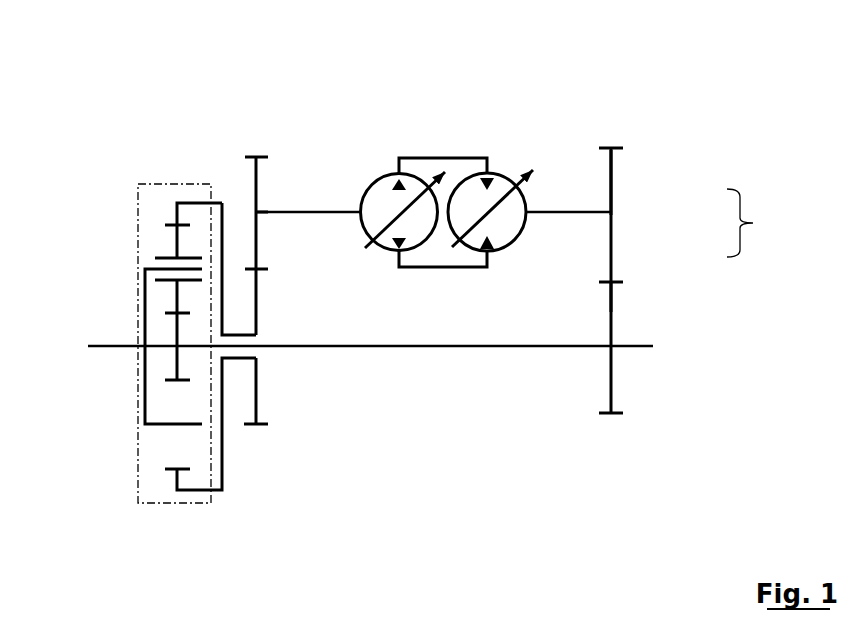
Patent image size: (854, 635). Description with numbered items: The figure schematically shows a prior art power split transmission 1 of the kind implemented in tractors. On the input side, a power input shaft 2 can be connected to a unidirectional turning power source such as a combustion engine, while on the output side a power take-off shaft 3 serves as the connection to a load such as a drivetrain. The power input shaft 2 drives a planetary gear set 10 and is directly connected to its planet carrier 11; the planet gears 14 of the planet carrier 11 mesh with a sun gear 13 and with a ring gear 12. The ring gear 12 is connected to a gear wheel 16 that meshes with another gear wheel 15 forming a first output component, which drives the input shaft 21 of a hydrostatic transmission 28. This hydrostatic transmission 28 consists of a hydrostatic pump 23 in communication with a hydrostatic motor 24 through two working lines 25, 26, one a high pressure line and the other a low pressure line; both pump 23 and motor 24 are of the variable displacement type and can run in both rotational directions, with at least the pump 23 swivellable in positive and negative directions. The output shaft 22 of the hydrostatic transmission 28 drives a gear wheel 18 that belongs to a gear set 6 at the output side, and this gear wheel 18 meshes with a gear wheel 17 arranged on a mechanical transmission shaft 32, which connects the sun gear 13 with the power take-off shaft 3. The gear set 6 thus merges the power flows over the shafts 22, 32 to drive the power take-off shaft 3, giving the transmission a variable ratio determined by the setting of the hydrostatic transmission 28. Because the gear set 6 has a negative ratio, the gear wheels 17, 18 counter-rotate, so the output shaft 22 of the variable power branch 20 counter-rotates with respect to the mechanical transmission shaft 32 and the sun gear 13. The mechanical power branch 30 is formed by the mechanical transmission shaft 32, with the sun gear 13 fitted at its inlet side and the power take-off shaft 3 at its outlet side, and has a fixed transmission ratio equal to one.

The power split transmission 1 is at (674, 83).
The power input shaft 2 is at (120, 345).
The power take-off shaft 3 is at (648, 350).
The gear set 6 is at (753, 223).
The planetary gear set 10 is at (140, 202).
The planet carrier 11 is at (145, 405).
The ring gear 12 is at (203, 491).
The sun gear 13 is at (177, 357).
The planet gears 14 is at (177, 242).
The gear wheel 15 is at (257, 175).
The gear wheel 16 is at (256, 393).
The gear wheel 17 is at (611, 310).
The gear wheel 18 is at (611, 182).
The variable power branch 20 is at (393, 128).
The input shaft 21 is at (293, 212).
The output shaft 22 is at (578, 212).
The hydrostatic pump 23 is at (372, 185).
The hydrostatic motor 24 is at (512, 186).
The working line 25 is at (450, 157).
The working line 26 is at (447, 267).
The hydrostatic transmission 28 is at (441, 191).
The mechanical power branch 30 is at (486, 390).
The mechanical transmission shaft 32 is at (370, 347).